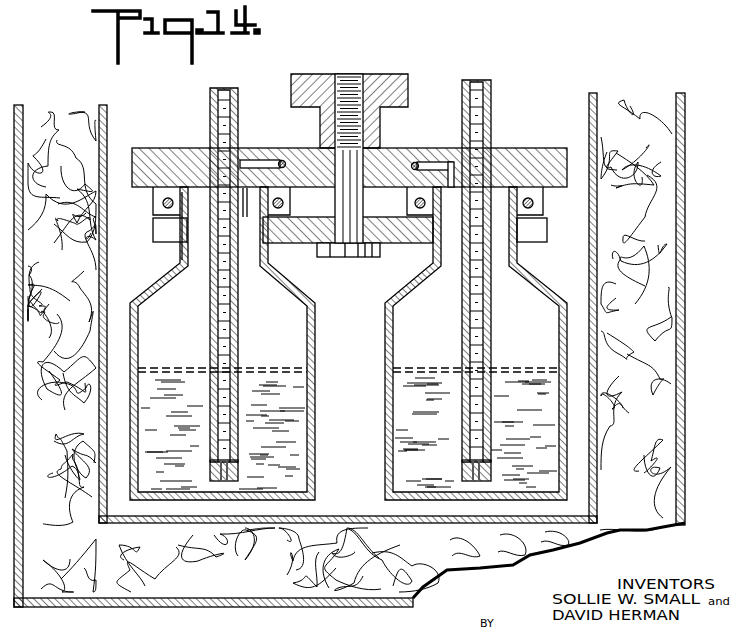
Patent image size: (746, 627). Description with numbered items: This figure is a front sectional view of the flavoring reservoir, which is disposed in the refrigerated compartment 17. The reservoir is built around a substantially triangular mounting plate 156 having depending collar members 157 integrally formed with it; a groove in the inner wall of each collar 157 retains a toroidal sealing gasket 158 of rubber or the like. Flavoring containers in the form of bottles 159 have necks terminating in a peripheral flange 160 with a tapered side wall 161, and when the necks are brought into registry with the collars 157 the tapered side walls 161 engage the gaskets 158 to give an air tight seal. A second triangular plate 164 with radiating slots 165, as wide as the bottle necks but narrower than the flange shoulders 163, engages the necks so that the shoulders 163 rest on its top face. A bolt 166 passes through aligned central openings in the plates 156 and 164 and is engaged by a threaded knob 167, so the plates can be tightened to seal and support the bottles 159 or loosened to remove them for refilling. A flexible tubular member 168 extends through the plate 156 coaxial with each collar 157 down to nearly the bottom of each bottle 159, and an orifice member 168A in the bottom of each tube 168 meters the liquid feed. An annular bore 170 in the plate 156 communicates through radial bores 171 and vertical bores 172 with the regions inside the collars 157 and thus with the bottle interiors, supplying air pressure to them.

The refrigerated compartment 17 is at (672, 195).
The mounting plate 156 is at (523, 147).
The collar member 157 is at (163, 197).
The toroidal sealing gasket 158 is at (160, 208).
The bottle 159 is at (385, 366).
The peripheral flange 160 is at (270, 234).
The tapered side wall 161 is at (281, 161).
The flange shoulder 163 is at (183, 240).
The second triangular plate 164 is at (412, 243).
The radiating slot 165 is at (547, 232).
The bolt 166 is at (350, 74).
The threaded knob 167 is at (383, 74).
The tubular member 168 is at (238, 342).
The orifice member 168A is at (236, 463).
The annular bore 170 is at (418, 163).
The radial bore 171 is at (262, 160).
The vertical bore 172 is at (244, 205).